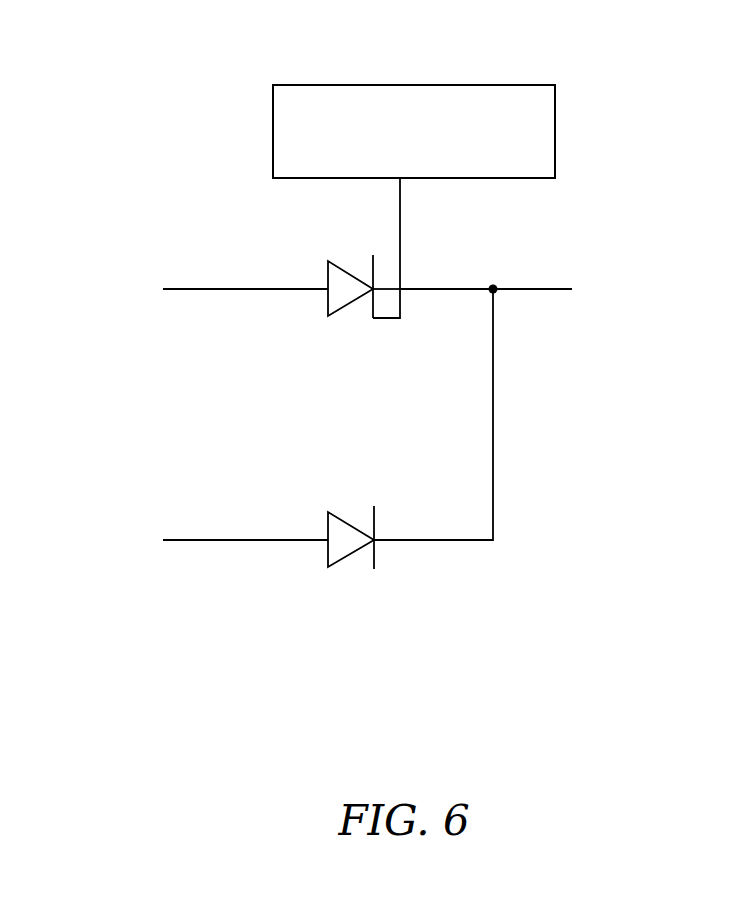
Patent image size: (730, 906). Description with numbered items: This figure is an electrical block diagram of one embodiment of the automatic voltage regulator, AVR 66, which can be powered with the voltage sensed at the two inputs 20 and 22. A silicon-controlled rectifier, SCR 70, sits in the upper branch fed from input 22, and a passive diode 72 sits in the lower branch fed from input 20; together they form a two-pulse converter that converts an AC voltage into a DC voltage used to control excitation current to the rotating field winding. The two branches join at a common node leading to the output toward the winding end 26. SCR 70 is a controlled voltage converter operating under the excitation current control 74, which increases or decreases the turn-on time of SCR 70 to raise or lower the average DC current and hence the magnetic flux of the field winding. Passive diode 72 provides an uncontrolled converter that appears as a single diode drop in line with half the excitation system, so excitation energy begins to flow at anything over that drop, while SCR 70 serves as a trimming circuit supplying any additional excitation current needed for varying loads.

The automatic voltage regulator 66 is at (602, 52).
The excitation current control 74 is at (540, 179).
The sensed voltage input 22 is at (178, 291).
The silicon-controlled rectifier 70 is at (353, 306).
The winding end 26 is at (555, 291).
The sensed voltage input 20 is at (178, 542).
The passive diode 72 is at (353, 556).